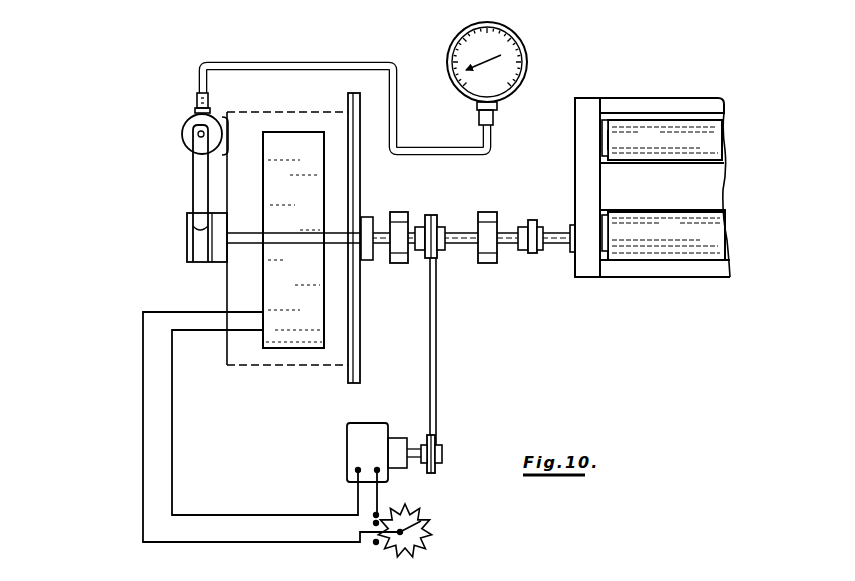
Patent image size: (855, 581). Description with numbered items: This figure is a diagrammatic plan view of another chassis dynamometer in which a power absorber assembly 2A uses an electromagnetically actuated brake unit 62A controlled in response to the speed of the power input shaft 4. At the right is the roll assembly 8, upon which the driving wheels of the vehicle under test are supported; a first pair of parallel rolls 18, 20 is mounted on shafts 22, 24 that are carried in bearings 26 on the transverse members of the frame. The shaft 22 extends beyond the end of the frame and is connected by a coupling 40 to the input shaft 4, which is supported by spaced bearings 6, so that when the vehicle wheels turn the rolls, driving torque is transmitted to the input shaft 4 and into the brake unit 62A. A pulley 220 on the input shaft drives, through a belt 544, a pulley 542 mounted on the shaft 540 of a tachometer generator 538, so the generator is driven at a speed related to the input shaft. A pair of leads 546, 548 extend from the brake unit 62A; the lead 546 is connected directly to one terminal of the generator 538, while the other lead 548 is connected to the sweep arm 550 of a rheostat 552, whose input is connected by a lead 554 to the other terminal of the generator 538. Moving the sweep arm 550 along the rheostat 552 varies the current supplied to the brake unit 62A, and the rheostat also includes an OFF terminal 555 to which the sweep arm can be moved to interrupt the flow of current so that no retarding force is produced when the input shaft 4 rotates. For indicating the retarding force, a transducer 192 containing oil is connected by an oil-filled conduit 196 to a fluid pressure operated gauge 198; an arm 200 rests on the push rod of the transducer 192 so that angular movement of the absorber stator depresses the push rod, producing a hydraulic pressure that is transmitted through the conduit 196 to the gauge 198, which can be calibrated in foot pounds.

The power absorber assembly 2A is at (367, 196).
The input shaft 4 is at (455, 244).
The bearings 6 is at (398, 212).
The roll assembly 8 is at (672, 90).
The roll 18 is at (710, 230).
The roll 20 is at (718, 139).
The shaft 22 is at (556, 246).
The shaft 24 is at (610, 140).
The bearings 26 is at (603, 128).
The coupling 40 is at (527, 220).
The electromagnetically actuated brake unit 62A is at (299, 131).
The transducer 192 is at (183, 125).
The conduit 196 is at (200, 94).
The fluid pressure operated gauge 198 is at (452, 47).
The arm 200 is at (201, 181).
The pulley 220 is at (440, 215).
The tachometer generator 538 is at (357, 430).
The shaft 540 is at (437, 445).
The pulley 542 is at (441, 471).
The belt 544 is at (438, 293).
The lead 546 is at (175, 398).
The lead 548 is at (146, 408).
The sweep arm 550 is at (428, 534).
The rheostat 552 is at (418, 521).
The lead 554 is at (381, 496).
The OFF terminal 555 is at (376, 523).